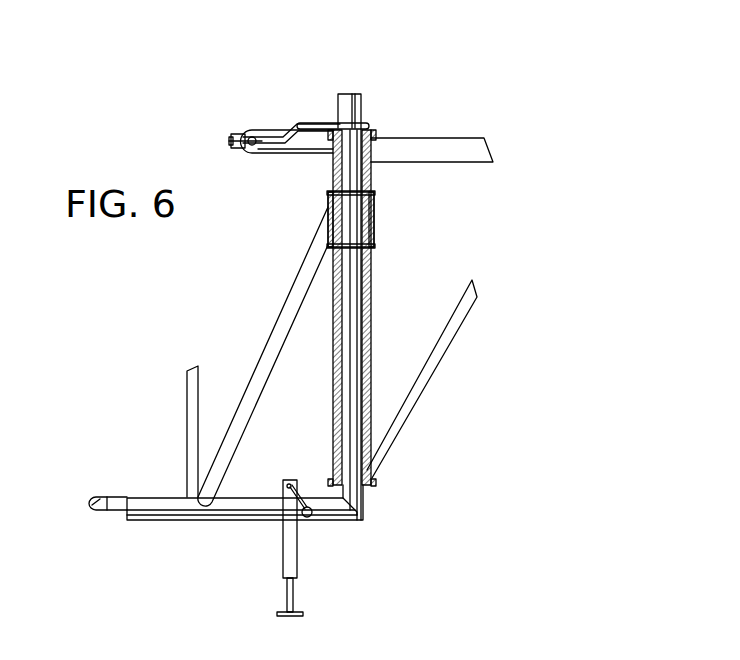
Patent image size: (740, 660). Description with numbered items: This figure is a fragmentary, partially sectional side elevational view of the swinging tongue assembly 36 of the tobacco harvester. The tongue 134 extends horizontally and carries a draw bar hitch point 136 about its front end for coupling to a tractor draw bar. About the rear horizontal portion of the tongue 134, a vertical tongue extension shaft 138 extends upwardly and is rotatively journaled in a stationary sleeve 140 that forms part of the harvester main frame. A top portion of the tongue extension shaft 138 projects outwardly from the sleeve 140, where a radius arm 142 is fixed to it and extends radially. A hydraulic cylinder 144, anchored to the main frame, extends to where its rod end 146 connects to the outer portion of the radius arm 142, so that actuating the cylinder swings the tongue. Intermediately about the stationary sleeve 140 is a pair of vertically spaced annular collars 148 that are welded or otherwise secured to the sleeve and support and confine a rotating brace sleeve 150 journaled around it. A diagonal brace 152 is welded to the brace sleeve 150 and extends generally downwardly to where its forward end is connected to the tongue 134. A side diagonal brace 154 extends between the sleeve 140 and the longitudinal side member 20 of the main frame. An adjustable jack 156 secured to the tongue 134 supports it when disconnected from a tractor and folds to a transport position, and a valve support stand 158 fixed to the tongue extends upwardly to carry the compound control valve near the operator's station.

The longitudinal side member 20 is at (447, 148).
The swinging tongue assembly 36 is at (465, 437).
The tongue 134 is at (207, 510).
The draw bar hitch point 136 is at (90, 502).
The tongue extension shaft 138 is at (363, 127).
The stationary sleeve 140 is at (367, 295).
The radius arm 142 is at (353, 107).
The hydraulic cylinder 144 is at (273, 132).
The rod end 146 is at (247, 133).
The annular collars 148 is at (372, 193).
The brace sleeve 150 is at (373, 215).
The diagonal brace 152 is at (297, 287).
The side diagonal brace 154 is at (460, 312).
The adjustable jack 156 is at (288, 563).
The valve support stand 158 is at (190, 388).